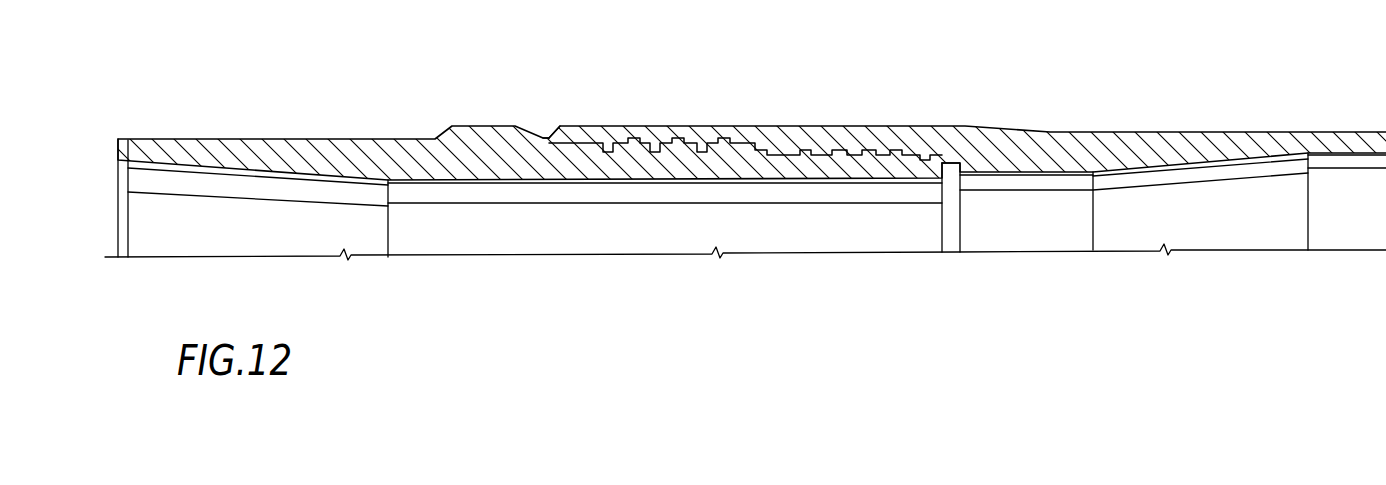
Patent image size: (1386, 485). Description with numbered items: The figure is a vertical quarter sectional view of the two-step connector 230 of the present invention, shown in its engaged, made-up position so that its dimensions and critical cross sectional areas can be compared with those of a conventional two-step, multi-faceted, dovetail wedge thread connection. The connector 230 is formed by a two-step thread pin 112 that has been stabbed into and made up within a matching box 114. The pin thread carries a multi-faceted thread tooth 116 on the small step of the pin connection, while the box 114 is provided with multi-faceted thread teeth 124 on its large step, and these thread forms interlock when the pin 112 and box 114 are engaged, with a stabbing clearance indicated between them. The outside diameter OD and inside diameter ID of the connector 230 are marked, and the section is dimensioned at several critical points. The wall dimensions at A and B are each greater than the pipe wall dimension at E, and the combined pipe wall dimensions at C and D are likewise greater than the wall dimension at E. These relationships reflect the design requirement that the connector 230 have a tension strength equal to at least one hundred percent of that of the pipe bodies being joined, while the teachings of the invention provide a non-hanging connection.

The two-step thread pin 112 is at (707, 181).
The box 114 is at (858, 125).
The multi-faceted thread tooth 116 is at (966, 125).
The multi-faceted thread teeth 124 is at (637, 145).
The connector 230 is at (676, 55).
The outside diameter OD is at (489, 126).
The inside diameter ID is at (519, 181).
The wall dimension at A is at (609, 153).
The wall dimension at B is at (924, 155).
The wall dimension at C is at (759, 143).
The wall dimension at D is at (773, 151).
The pipe wall dimension at E is at (1348, 176).